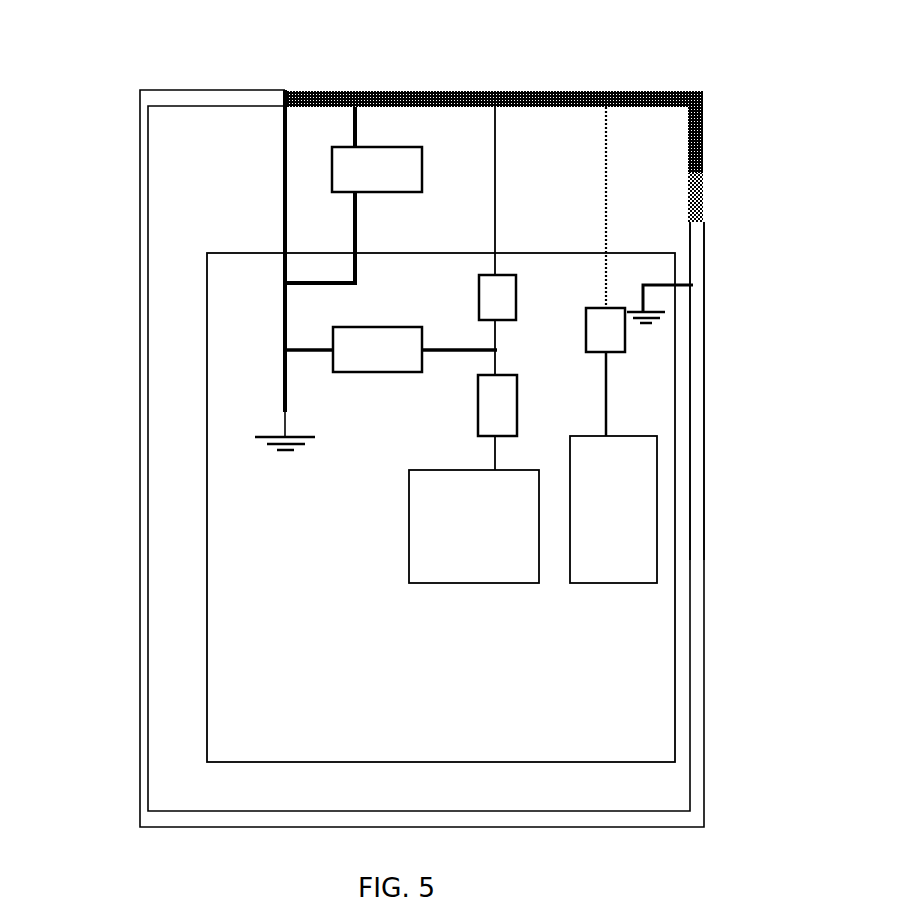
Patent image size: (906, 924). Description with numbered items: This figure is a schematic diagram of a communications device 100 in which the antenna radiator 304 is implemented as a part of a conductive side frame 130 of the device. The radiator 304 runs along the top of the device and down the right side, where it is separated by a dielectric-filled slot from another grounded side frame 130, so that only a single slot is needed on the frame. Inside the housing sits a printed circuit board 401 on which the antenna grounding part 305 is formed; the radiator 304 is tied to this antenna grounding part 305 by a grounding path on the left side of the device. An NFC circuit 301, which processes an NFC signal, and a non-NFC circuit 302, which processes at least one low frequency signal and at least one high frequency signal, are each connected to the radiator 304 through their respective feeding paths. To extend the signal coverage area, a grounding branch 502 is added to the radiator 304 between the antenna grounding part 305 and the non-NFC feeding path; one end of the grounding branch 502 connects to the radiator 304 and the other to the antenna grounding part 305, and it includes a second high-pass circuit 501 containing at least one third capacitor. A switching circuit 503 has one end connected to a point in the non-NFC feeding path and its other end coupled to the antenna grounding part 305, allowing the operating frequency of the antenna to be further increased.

The communications device 100 is at (110, 305).
The side frame 130 is at (706, 432).
The radiator 304 is at (528, 90).
The antenna grounding part 305 is at (275, 243).
The printed circuit board 401 is at (441, 507).
The second high-pass circuit 501 is at (377, 149).
The grounding branch 502 is at (358, 243).
The switching circuit 503 is at (391, 349).
The non-NFC circuit 302 is at (474, 345).
The NFC circuit 301 is at (631, 345).